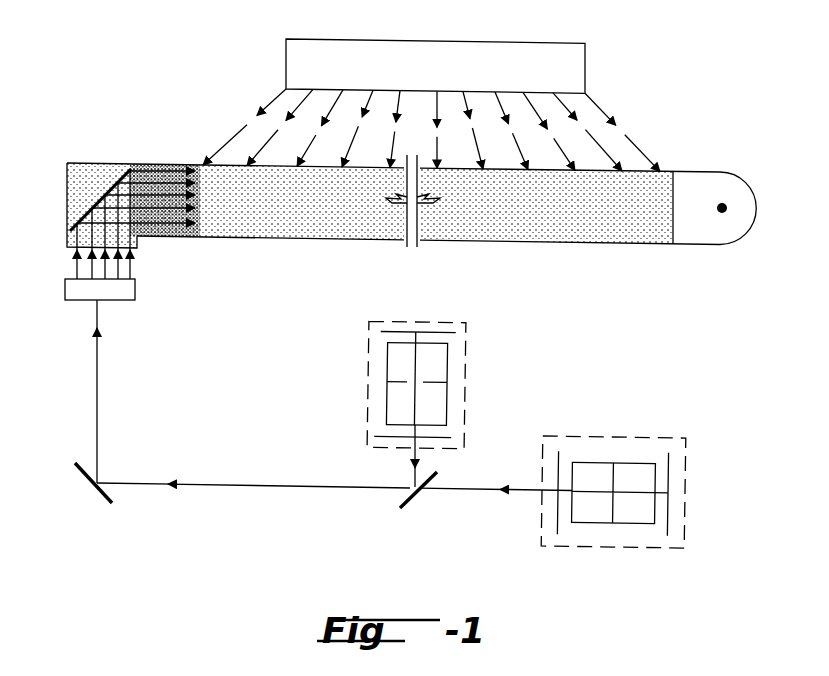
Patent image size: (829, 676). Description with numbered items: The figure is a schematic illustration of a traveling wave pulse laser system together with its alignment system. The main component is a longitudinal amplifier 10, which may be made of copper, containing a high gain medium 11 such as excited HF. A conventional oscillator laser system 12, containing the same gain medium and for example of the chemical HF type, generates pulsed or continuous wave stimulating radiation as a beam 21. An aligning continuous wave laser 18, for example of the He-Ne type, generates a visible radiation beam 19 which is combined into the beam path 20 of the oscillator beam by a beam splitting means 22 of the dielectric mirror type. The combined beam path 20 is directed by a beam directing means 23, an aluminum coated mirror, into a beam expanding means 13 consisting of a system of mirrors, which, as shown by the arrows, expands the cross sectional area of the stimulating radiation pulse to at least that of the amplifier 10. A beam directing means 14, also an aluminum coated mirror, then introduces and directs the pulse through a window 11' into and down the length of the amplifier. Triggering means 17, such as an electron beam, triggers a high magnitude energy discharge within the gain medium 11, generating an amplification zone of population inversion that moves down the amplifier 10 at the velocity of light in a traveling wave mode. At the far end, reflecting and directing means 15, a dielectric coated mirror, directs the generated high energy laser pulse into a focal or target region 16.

The longitudinal amplifier 10 is at (522, 242).
The high gain medium 11 is at (149, 184).
The window 11' is at (698, 221).
The oscillator laser system 12 is at (465, 335).
The beam expanding means 13 is at (135, 284).
The beam directing means 14 is at (95, 202).
The reflecting and directing means 15 is at (737, 176).
The focal or target region 16 is at (727, 206).
The triggering means 17 is at (447, 42).
The aligning continuous wave laser 18 is at (688, 490).
The visible radiation beam 19 is at (444, 489).
The beam path 20 is at (220, 484).
The beam of oscillator laser 21 is at (414, 484).
The beam splitting means 22 is at (410, 500).
The beam directing means 23 is at (94, 492).